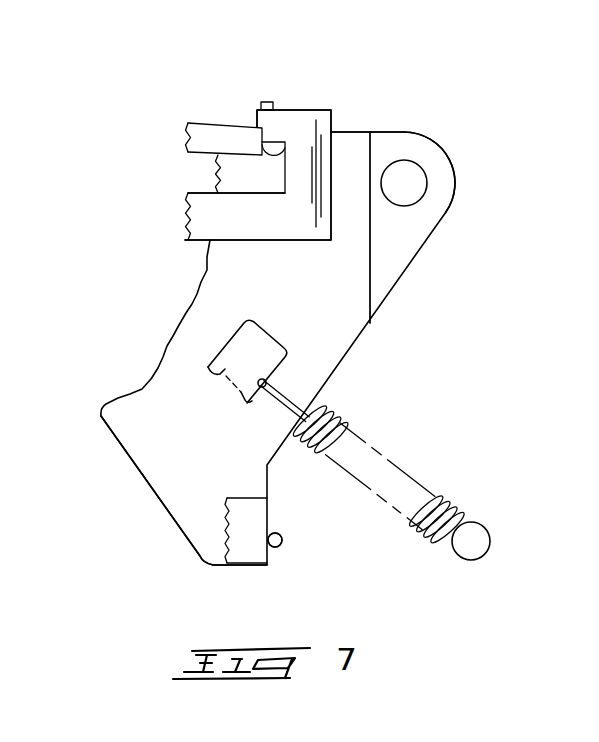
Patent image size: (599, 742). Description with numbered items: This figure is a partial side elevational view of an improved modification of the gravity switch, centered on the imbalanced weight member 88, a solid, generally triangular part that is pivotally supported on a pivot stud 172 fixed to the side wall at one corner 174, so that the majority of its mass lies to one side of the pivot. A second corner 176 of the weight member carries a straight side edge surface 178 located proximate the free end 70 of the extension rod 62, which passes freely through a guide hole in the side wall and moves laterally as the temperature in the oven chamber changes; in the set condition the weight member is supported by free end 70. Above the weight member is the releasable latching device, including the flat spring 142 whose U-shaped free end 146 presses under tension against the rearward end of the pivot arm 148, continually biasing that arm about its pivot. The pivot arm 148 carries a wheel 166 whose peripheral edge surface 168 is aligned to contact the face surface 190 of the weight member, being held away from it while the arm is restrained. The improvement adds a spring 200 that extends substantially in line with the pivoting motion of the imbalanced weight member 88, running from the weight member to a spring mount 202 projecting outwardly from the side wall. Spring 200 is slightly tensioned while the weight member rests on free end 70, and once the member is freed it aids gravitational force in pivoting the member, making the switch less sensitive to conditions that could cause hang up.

The extension rod 62 is at (280, 535).
The free end 70 is at (282, 547).
The imbalanced weight member 88 is at (359, 337).
The flat spring 142 is at (207, 212).
The free end 146 is at (282, 222).
The pivot arm 148 is at (213, 122).
The wheel 166 is at (277, 104).
The peripheral edge surface 168 is at (270, 100).
The pivot stud 172 is at (408, 178).
The corner 174 is at (425, 216).
The second corner 176 is at (208, 546).
The straight side edge surface 178 is at (268, 507).
The face surface 190 is at (353, 148).
The spring 200 is at (437, 500).
The spring mount 202 is at (491, 541).